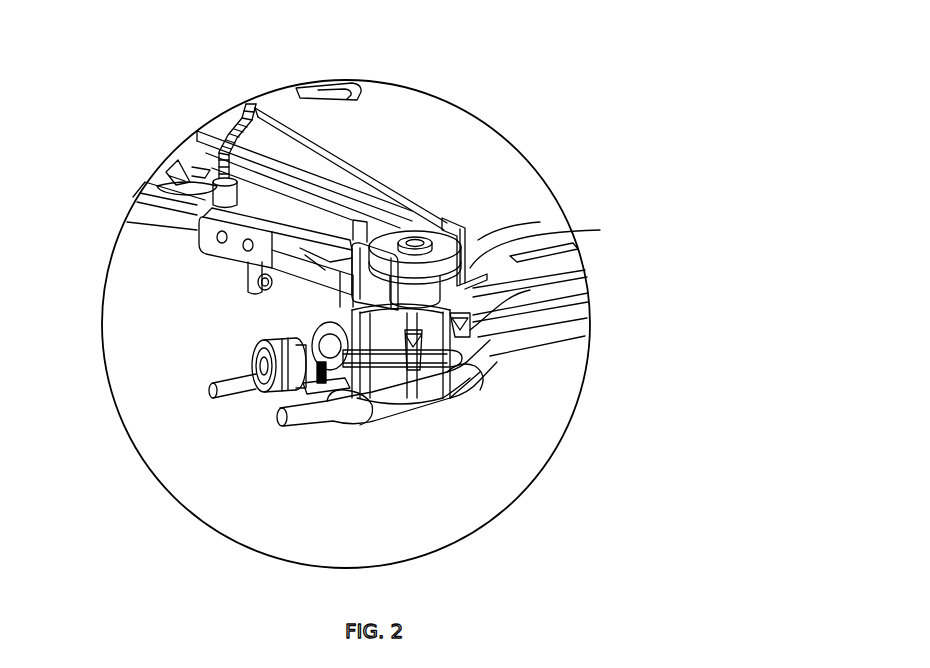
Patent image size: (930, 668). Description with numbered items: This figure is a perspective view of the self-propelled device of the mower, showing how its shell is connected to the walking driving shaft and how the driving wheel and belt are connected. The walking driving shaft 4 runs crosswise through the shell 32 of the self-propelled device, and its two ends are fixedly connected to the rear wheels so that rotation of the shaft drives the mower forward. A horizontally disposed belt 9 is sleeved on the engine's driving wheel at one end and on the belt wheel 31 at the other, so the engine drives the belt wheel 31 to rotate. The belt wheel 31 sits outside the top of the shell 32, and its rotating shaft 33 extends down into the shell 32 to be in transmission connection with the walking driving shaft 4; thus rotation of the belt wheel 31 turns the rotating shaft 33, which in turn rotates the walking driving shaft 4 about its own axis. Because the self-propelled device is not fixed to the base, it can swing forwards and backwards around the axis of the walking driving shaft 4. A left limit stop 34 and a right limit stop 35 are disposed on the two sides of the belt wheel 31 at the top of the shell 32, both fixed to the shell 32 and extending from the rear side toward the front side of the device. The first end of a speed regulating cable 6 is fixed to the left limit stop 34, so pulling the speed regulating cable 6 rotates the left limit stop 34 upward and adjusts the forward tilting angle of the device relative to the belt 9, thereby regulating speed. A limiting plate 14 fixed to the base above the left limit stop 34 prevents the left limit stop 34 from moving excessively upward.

The walking driving shaft 4 is at (238, 382).
The speed regulating cable 6 is at (223, 178).
The belt 9 is at (380, 197).
The limiting plate 14 is at (217, 223).
The belt wheel 31 is at (450, 268).
The shell 32 is at (530, 290).
The rotating shaft 33 is at (413, 237).
The left limit stop 34 is at (268, 275).
The right limit stop 35 is at (473, 233).